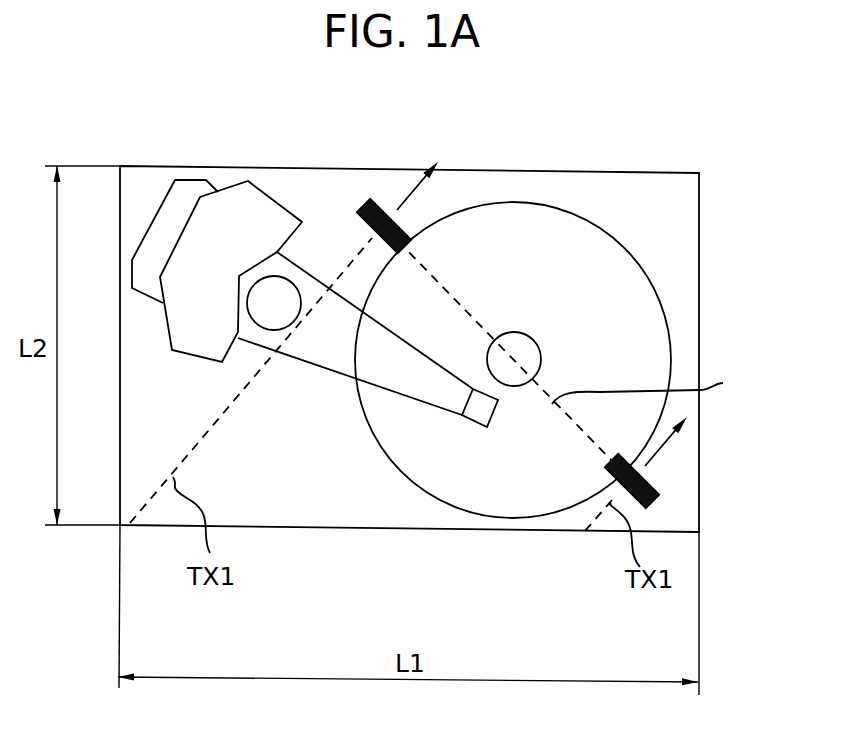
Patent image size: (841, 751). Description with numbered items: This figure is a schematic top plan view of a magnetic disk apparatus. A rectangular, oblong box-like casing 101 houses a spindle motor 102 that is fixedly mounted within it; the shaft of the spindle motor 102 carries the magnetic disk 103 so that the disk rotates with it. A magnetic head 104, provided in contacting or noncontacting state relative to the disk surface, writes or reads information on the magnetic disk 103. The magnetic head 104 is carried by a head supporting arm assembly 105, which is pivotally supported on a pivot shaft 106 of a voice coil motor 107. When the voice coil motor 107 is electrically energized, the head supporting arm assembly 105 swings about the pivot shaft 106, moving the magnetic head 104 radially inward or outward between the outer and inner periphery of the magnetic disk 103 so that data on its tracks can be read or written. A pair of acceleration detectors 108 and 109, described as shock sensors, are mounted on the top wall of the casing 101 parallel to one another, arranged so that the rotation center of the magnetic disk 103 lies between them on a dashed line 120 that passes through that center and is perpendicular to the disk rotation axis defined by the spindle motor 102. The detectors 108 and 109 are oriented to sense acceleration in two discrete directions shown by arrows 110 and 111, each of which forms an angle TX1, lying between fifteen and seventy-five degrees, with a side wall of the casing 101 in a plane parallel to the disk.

The box-like casing 101 is at (645, 167).
The spindle motor 102 is at (515, 353).
The magnetic disk 103 is at (637, 315).
The magnetic head 104 is at (482, 420).
The head supporting arm assembly 105 is at (395, 370).
The pivot shaft 106 is at (273, 293).
The voice coil motor 107 is at (197, 247).
The acceleration detector 108 is at (362, 206).
The acceleration detector 109 is at (655, 503).
The arrow 110 is at (412, 191).
The arrow 111 is at (664, 446).
The dashed line 120 is at (663, 386).